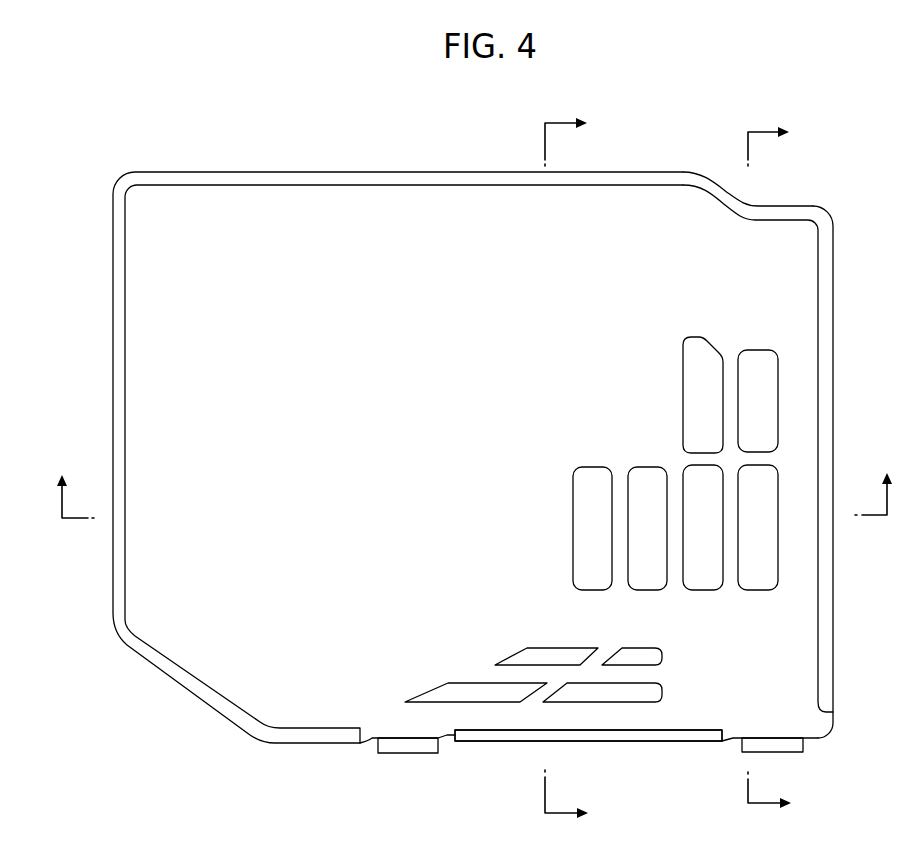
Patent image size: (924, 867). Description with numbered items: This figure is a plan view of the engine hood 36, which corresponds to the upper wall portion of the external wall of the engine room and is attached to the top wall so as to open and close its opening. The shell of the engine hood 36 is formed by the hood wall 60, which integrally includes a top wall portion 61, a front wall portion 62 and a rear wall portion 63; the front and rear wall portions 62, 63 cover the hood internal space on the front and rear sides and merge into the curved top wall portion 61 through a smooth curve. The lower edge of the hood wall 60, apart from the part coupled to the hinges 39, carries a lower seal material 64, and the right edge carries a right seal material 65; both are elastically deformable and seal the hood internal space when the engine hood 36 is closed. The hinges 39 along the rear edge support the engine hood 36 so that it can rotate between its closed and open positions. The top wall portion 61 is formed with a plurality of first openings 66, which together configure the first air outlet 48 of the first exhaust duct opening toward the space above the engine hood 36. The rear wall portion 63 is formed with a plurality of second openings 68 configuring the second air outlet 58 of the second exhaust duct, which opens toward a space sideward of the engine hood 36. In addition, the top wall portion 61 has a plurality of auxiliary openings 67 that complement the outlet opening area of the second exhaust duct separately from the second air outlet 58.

The engine hood 36 is at (694, 132).
The hinges 39 is at (405, 751).
The first air outlet 48 is at (796, 550).
The second air outlet 58 is at (632, 718).
The hood wall 60 is at (398, 218).
The top wall portion 61 is at (360, 440).
The front wall portion 62 is at (634, 192).
The rear wall portion 63 is at (695, 712).
The lower seal material 64 is at (310, 177).
The right seal material 65 is at (827, 327).
The first openings 66 is at (703, 400).
The auxiliary openings 67 is at (645, 477).
The second openings 68 is at (620, 657).